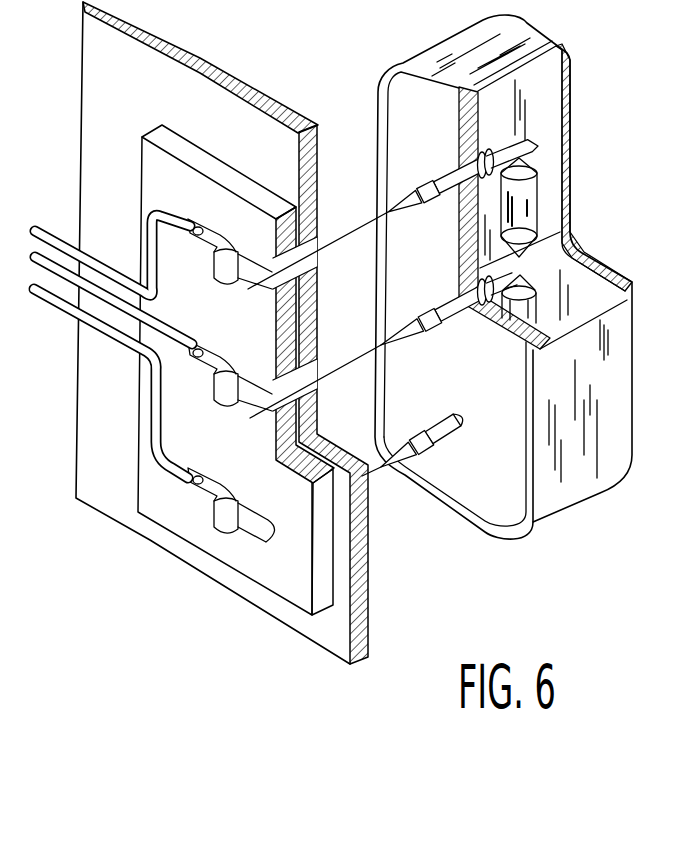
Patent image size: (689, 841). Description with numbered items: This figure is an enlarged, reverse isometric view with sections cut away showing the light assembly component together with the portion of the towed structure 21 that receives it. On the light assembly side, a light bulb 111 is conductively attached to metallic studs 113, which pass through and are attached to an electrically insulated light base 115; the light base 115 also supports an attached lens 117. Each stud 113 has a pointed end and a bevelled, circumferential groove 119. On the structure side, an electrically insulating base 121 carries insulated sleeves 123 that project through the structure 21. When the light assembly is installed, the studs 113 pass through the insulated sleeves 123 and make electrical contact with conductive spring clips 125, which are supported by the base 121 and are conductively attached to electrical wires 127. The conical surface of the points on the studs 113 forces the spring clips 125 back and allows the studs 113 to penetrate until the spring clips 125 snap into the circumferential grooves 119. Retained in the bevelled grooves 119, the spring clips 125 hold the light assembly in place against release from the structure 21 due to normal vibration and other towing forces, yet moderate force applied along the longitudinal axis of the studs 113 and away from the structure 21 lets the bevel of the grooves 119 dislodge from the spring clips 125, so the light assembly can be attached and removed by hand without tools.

The structure 21 is at (270, 108).
The electrically insulating base 121 is at (200, 200).
The insulated sleeves 123 is at (304, 250).
The conductive spring clips 125 is at (215, 243).
The electrical wires 127 is at (92, 244).
The light bulb 111 is at (527, 195).
The metallic studs 113 is at (432, 183).
The light base 115 is at (506, 391).
The lens 117 is at (568, 483).
The bevelled circumferential groove 119 is at (418, 207).